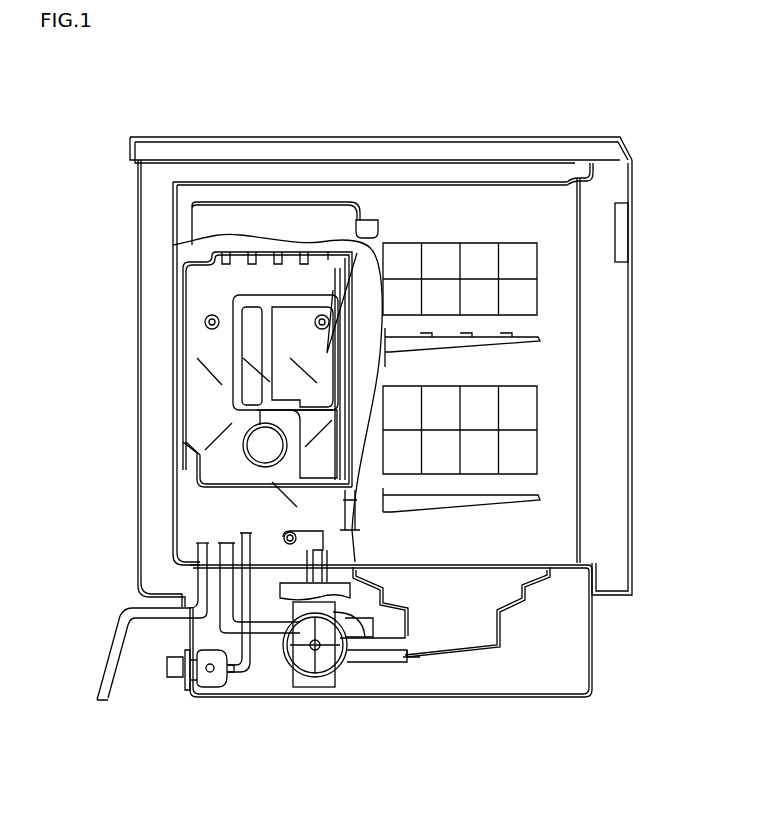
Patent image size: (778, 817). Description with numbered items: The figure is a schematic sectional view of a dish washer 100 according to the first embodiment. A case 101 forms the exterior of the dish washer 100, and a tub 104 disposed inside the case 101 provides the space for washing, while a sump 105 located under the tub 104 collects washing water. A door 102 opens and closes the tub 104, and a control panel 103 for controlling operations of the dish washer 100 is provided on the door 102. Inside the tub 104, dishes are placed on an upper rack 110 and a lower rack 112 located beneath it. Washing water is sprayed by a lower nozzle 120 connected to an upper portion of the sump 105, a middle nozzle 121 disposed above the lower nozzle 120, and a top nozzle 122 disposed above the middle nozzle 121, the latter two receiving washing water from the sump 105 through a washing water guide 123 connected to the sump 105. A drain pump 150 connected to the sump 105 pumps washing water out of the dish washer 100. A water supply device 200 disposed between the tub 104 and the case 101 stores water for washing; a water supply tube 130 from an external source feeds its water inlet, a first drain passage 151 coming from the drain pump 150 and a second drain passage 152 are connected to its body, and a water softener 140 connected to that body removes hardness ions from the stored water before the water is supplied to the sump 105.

The dish washer 100 is at (452, 106).
The case 101 is at (138, 281).
The door 102 is at (637, 323).
The control panel 103 is at (627, 230).
The tub 104 is at (173, 223).
The sump 105 is at (465, 650).
The upper rack 110 is at (516, 242).
The lower rack 112 is at (538, 404).
The lower nozzle 120 is at (540, 497).
The middle nozzle 121 is at (538, 338).
The top nozzle 122 is at (372, 218).
The washing water guide 123 is at (214, 197).
The water supply tube 130 is at (240, 675).
The water softener 140 is at (348, 600).
The drain pump 150 is at (315, 678).
The first drain passage 151 is at (263, 633).
The second drain passage 152 is at (100, 660).
The water supply device 200 is at (204, 323).